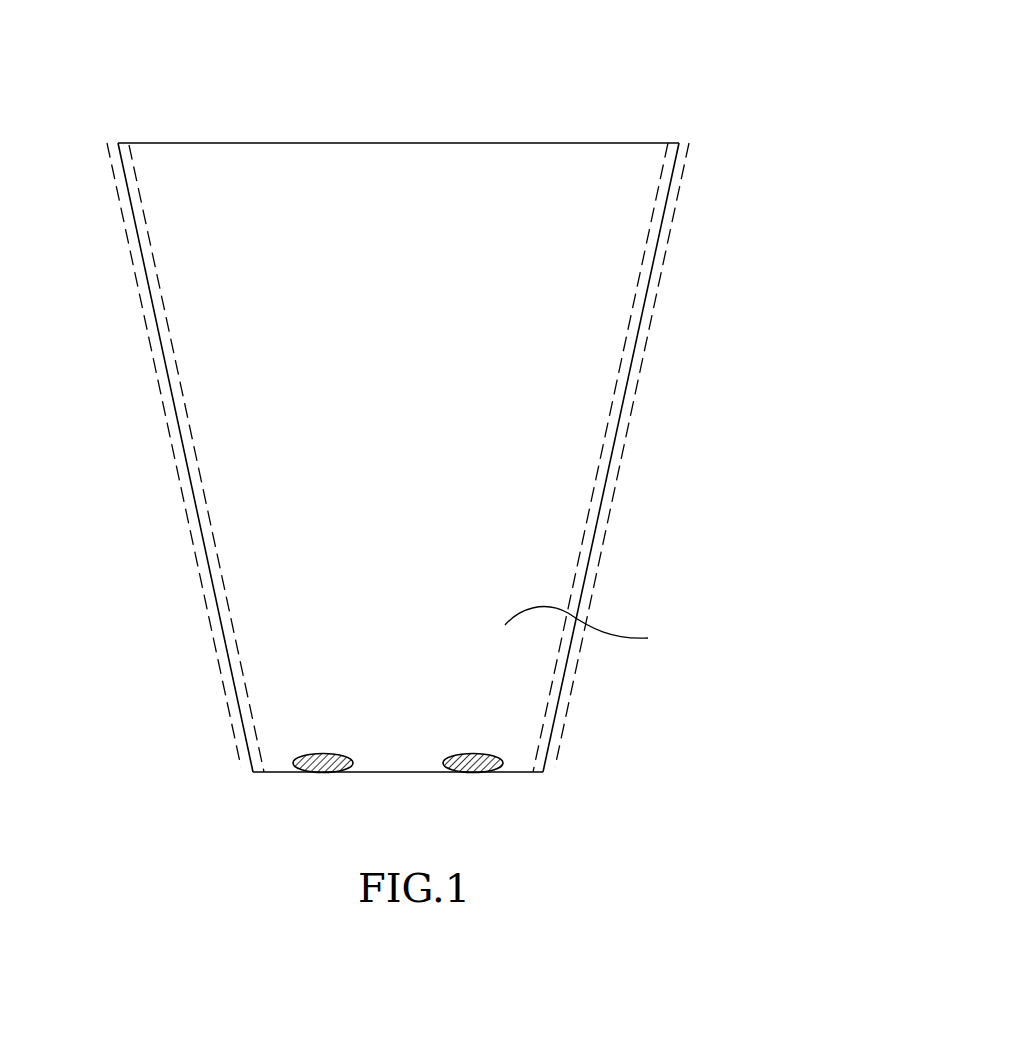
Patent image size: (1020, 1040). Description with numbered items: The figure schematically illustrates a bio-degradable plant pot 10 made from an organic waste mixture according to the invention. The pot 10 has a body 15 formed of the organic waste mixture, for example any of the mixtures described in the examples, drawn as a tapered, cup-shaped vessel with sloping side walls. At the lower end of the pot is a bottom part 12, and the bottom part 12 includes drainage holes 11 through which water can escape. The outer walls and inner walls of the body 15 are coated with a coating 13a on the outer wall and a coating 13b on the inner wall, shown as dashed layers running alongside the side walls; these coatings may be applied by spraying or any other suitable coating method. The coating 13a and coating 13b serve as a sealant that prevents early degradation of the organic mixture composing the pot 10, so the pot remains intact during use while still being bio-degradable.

The bio-degradable plant pot 10 is at (710, 234).
The drainage holes 11 is at (473, 772).
The bottom part 12 is at (279, 760).
The coating 13a is at (190, 538).
The coating 13b is at (139, 189).
The body 15 is at (591, 628).